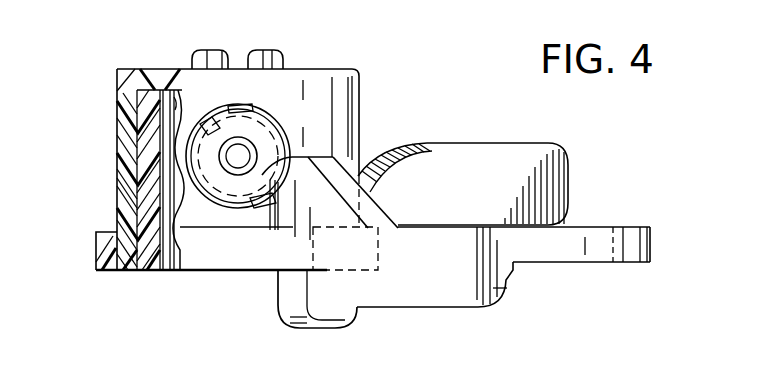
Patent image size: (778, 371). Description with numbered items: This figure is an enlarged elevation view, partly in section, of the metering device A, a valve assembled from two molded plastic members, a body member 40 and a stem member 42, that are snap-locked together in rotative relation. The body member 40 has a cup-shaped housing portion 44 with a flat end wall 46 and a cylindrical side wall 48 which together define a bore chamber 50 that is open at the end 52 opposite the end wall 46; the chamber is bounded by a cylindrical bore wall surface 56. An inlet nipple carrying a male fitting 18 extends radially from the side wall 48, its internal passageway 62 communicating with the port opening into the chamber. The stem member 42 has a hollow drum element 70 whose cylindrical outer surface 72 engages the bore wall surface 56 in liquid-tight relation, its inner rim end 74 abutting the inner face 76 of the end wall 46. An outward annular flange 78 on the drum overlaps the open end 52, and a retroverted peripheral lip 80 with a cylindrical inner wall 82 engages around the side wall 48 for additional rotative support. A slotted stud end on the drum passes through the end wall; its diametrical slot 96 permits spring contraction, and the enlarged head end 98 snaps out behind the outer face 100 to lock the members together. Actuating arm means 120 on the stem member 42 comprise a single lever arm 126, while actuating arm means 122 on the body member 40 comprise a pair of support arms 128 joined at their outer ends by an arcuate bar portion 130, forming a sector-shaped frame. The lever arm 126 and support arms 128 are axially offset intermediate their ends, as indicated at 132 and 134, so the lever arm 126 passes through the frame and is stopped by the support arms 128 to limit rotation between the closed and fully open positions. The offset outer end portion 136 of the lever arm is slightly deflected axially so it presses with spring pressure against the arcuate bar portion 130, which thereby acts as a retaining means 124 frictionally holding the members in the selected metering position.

The male fitting 18 is at (280, 112).
The body member 40 is at (364, 81).
The stem member 42 is at (156, 285).
The housing portion 44 is at (117, 78).
The end wall 46 is at (163, 73).
The side wall 48 is at (118, 126).
The bore chamber 50 is at (180, 216).
The open end 52 is at (128, 247).
The cylindrical bore wall surface 56 is at (134, 157).
The internal passageway 62 is at (241, 146).
The drum element 70 is at (138, 201).
The cylindrical outer surface 72 is at (123, 100).
The inner rim end 74 is at (128, 97).
The inner face 76 is at (180, 100).
The annular flange 78 is at (103, 271).
The retroverted peripheral lip 80 is at (102, 233).
The cylindrical inner wall 82 is at (127, 246).
The diametrical slot 96 is at (245, 56).
The head end 98 is at (277, 58).
The outer face 100 is at (337, 64).
The actuating arm means 120 is at (485, 129).
The actuating arm means 122 is at (516, 309).
The retaining means 124 is at (580, 211).
The lever arm 126 is at (423, 153).
The support arms 128 is at (357, 300).
The arcuate bar portion 130 is at (633, 243).
The axial offset 132 is at (373, 158).
The axial offset 134 is at (330, 245).
The offset outer end portion 136 is at (532, 152).
The metering device A is at (101, 77).